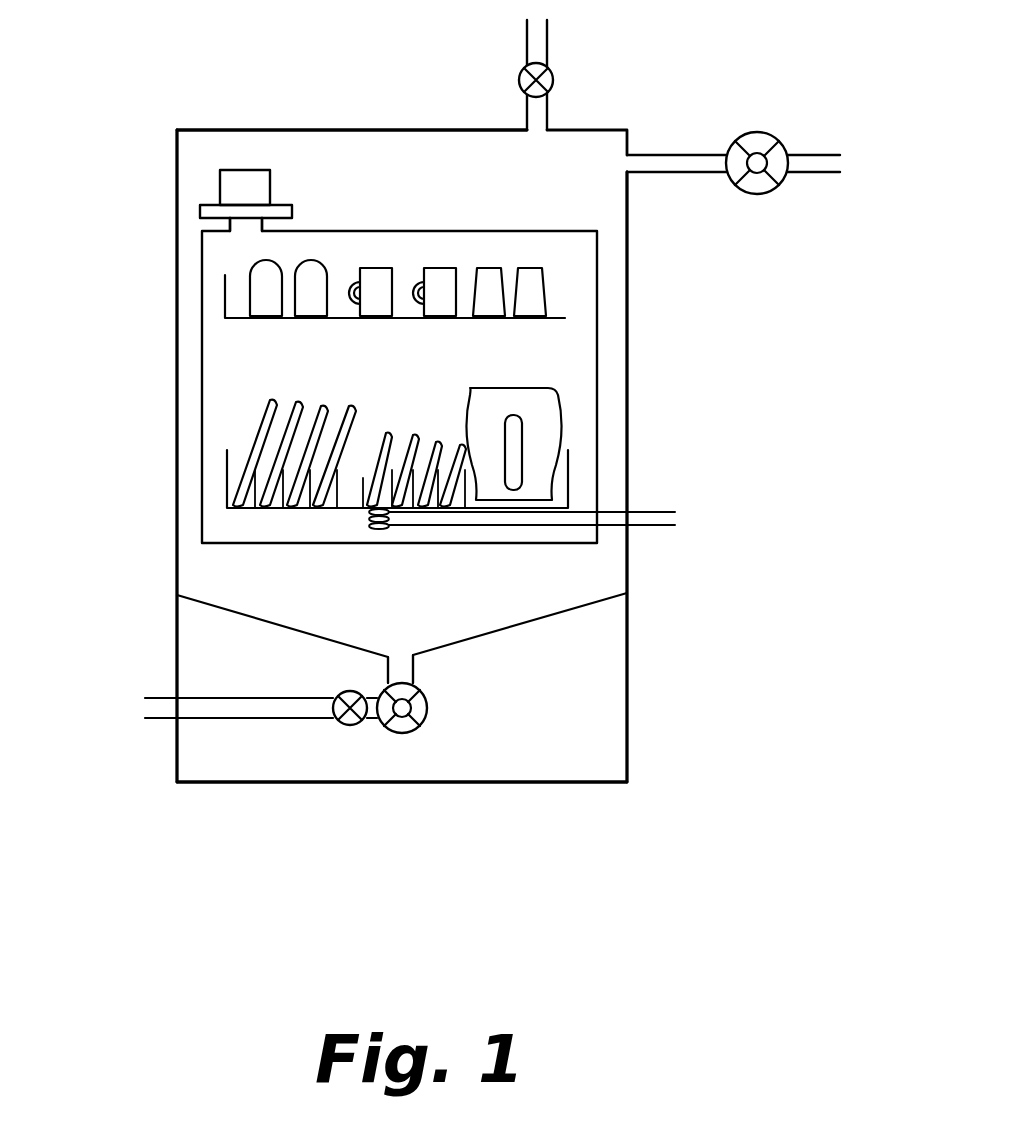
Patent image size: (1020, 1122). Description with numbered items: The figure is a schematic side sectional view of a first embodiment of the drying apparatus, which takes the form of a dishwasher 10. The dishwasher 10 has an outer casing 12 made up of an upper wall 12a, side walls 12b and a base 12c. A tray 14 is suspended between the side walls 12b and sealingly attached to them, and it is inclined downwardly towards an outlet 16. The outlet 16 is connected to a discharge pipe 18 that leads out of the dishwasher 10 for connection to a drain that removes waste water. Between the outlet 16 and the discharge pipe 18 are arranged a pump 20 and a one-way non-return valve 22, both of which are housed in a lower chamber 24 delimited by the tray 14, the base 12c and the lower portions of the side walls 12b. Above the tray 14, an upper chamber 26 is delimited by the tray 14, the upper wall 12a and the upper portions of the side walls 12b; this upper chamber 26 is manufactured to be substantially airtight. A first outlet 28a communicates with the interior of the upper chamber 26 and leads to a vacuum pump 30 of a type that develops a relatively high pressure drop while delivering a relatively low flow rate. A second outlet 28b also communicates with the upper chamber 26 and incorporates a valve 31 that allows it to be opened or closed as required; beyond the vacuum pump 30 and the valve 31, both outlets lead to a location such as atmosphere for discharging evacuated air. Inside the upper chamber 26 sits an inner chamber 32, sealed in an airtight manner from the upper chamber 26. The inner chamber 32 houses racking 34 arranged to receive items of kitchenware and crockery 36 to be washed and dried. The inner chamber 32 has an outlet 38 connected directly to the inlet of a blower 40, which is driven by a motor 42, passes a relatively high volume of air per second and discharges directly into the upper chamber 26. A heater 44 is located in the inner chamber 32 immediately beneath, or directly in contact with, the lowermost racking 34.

The dishwasher 10 is at (213, 88).
The outer casing 12 is at (176, 313).
The upper wall 12a is at (398, 129).
The side walls 12b is at (176, 570).
The base 12c is at (219, 783).
The tray 14 is at (565, 612).
The outlet 16 is at (400, 668).
The discharge pipe 18 is at (205, 697).
The pump 20 is at (414, 732).
The non-return valve 22 is at (356, 725).
The lower chamber 24 is at (597, 706).
The upper chamber 26 is at (598, 285).
The first outlet 28a is at (713, 175).
The second outlet 28b is at (550, 108).
The vacuum pump 30 is at (759, 131).
The valve 31 is at (519, 72).
The inner chamber 32 is at (583, 458).
The racking 34 is at (245, 320).
The kitchenware and crockery 36 is at (486, 267).
The outlet 38 is at (238, 225).
The blower 40 is at (210, 208).
The motor 42 is at (250, 170).
The heater 44 is at (381, 531).